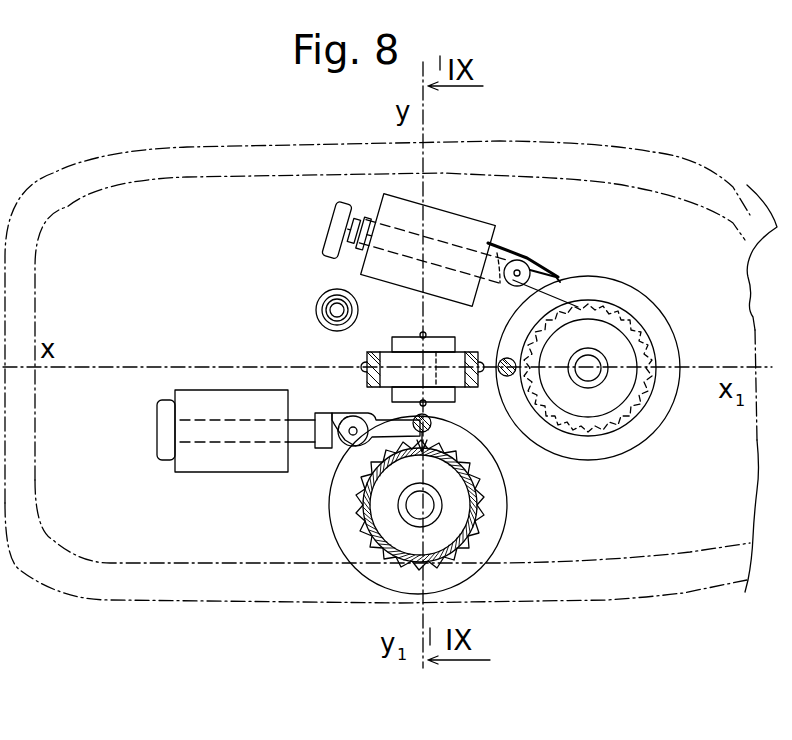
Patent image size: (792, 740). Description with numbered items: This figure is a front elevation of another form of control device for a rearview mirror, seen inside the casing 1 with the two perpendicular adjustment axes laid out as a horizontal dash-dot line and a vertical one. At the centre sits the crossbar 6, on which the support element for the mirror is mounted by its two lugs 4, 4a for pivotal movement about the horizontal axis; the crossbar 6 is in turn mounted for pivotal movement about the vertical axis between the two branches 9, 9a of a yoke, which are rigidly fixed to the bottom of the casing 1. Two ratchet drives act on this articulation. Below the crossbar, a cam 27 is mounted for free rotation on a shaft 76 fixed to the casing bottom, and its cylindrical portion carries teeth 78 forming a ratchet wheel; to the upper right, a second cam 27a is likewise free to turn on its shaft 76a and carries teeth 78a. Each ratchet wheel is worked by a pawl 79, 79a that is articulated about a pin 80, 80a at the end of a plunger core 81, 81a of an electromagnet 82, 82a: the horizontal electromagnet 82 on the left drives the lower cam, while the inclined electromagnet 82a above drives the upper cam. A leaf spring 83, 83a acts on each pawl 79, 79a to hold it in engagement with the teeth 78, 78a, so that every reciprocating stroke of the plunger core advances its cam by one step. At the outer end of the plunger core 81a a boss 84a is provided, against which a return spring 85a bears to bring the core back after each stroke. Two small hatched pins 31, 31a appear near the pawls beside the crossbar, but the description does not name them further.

The casing 1 is at (722, 168).
The lug 4 is at (484, 360).
The lug 4a is at (376, 352).
The crossbar 6 is at (435, 357).
The yoke branch 9 is at (408, 336).
The yoke branch 9a is at (443, 405).
The cam 27 is at (506, 546).
The cam 27a is at (664, 425).
The lower pawl pin 31 is at (432, 421).
The upper pawl pin 31a is at (507, 358).
The shaft 76 is at (415, 497).
The shaft 76a is at (594, 366).
The teeth 78 is at (462, 557).
The teeth 78a is at (662, 347).
The pawl 79 is at (462, 470).
The pawl 79a is at (622, 283).
The pin 80 is at (350, 445).
The pin 80a is at (537, 266).
The plunger core 81 is at (297, 432).
The plunger core 81a is at (497, 252).
The electromagnet 82 is at (228, 405).
The electromagnet 82a is at (435, 227).
The leaf spring 83 is at (370, 413).
The leaf spring 83a is at (557, 262).
The boss 84a is at (337, 200).
The return spring 85a is at (360, 220).